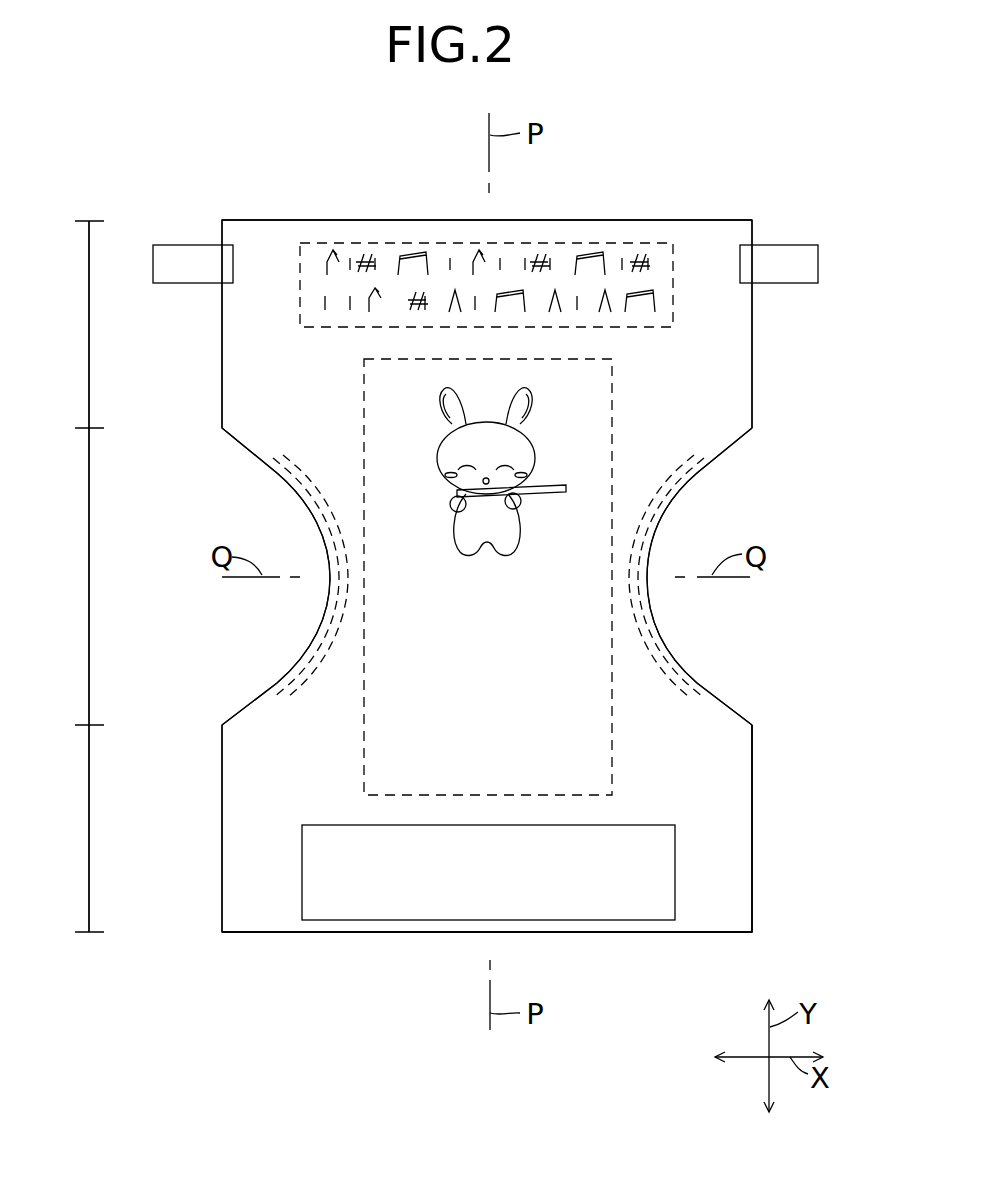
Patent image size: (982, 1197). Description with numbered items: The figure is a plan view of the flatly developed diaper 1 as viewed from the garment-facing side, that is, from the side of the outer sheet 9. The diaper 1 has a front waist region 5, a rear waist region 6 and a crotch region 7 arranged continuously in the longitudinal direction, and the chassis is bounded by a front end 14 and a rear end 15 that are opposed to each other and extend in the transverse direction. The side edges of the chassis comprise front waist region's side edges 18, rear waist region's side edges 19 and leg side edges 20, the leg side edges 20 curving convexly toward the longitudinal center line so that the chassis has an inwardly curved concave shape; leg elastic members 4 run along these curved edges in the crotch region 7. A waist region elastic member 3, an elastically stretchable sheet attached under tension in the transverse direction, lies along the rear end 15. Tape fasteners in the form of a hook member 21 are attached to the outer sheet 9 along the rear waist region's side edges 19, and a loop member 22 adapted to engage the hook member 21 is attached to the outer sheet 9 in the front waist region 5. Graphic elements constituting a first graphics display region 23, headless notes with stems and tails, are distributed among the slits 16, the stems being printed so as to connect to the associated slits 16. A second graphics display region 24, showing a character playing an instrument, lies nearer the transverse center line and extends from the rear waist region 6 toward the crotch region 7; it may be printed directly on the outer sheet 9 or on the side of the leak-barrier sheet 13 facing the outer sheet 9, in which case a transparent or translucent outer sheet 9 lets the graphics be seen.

The diaper 1 is at (728, 142).
The waist region elastic member 3 is at (520, 260).
The leg elastic members 4 is at (655, 628).
The front waist region 5 is at (89, 824).
The rear waist region 6 is at (89, 326).
The crotch region 7 is at (89, 560).
The outer sheet 9 is at (730, 778).
The leak-barrier sheet 13 is at (614, 708).
The front end 14 is at (415, 932).
The rear end 15 is at (436, 220).
The slits 16 is at (300, 305).
The front waist region's side edges 18 is at (753, 845).
The rear waist region's side edges 19 is at (752, 378).
The leg side edges 20 is at (652, 538).
The hook member 21 is at (791, 253).
The loop member 22 is at (353, 890).
The first graphics display region 23 is at (520, 293).
The second graphics display region 24 is at (560, 475).